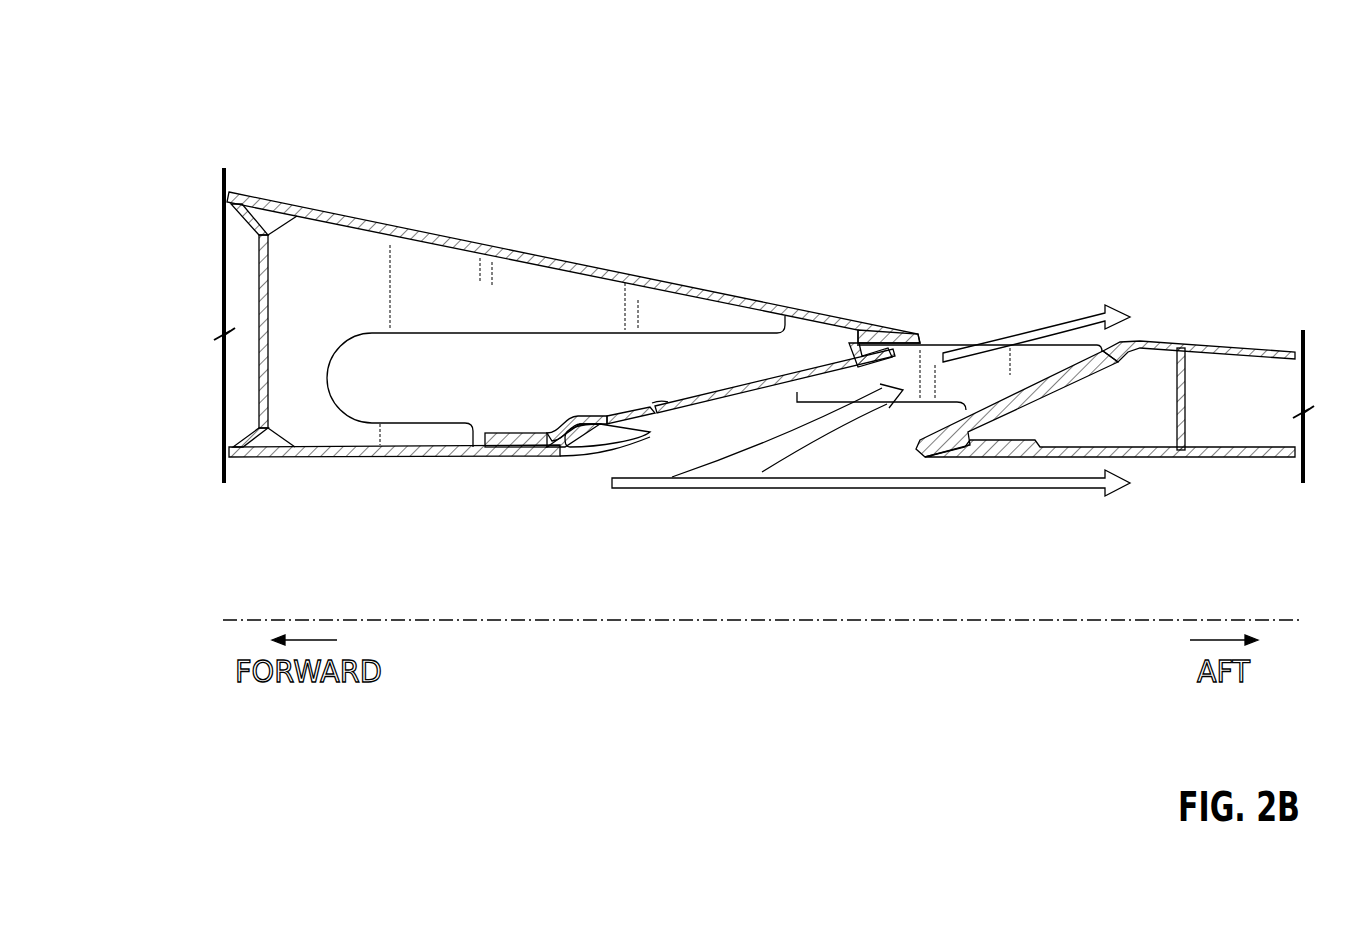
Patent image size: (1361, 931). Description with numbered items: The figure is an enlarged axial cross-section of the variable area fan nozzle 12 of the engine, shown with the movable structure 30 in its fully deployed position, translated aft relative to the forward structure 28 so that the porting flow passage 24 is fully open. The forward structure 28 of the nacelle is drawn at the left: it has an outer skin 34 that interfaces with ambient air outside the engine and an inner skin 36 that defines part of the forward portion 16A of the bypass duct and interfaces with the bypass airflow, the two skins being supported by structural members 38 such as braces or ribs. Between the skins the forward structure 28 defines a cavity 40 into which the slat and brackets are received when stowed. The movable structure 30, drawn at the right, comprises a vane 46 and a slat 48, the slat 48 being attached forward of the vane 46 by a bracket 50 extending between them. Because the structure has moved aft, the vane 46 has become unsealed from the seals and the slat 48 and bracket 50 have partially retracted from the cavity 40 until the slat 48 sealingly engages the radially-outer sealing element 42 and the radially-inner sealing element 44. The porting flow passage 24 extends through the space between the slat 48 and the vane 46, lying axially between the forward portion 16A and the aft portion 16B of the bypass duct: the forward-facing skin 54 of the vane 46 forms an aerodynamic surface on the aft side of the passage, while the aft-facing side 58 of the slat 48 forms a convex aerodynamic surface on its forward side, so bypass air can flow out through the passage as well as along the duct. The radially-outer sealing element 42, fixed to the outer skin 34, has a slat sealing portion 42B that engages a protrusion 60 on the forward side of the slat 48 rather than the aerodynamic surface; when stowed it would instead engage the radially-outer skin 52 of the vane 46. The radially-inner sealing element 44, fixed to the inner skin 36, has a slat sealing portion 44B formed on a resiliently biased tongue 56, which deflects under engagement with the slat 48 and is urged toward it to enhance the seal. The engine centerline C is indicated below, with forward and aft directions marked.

The variable area fan nozzle (VAFN) 12 is at (247, 122).
The forward structure 28 is at (407, 172).
The outer skin 34 is at (387, 223).
The structural members 38 is at (280, 383).
The inner skin 36 is at (242, 463).
The cavity 40 is at (436, 383).
The radially-inner sealing element 44 is at (562, 457).
The tongue 56 is at (668, 428).
The slat sealing portion 44B is at (645, 413).
The slat 48 is at (717, 403).
The slat sealing portion 42B is at (837, 340).
The protrusion 60 is at (860, 333).
The radially-outer sealing element 42 is at (887, 327).
The aft-facing side 58 is at (733, 403).
The bracket 50 is at (1004, 390).
The porting flow passage 24 is at (960, 298).
The forward-facing skin 54 is at (957, 410).
The radially-outer skin 52 is at (1268, 352).
The vane 46 is at (1100, 455).
The forward portion 16A is at (362, 542).
The aft portion 16B is at (1202, 542).
The movable structure 30 is at (1268, 515).
The engine centerline C is at (245, 620).